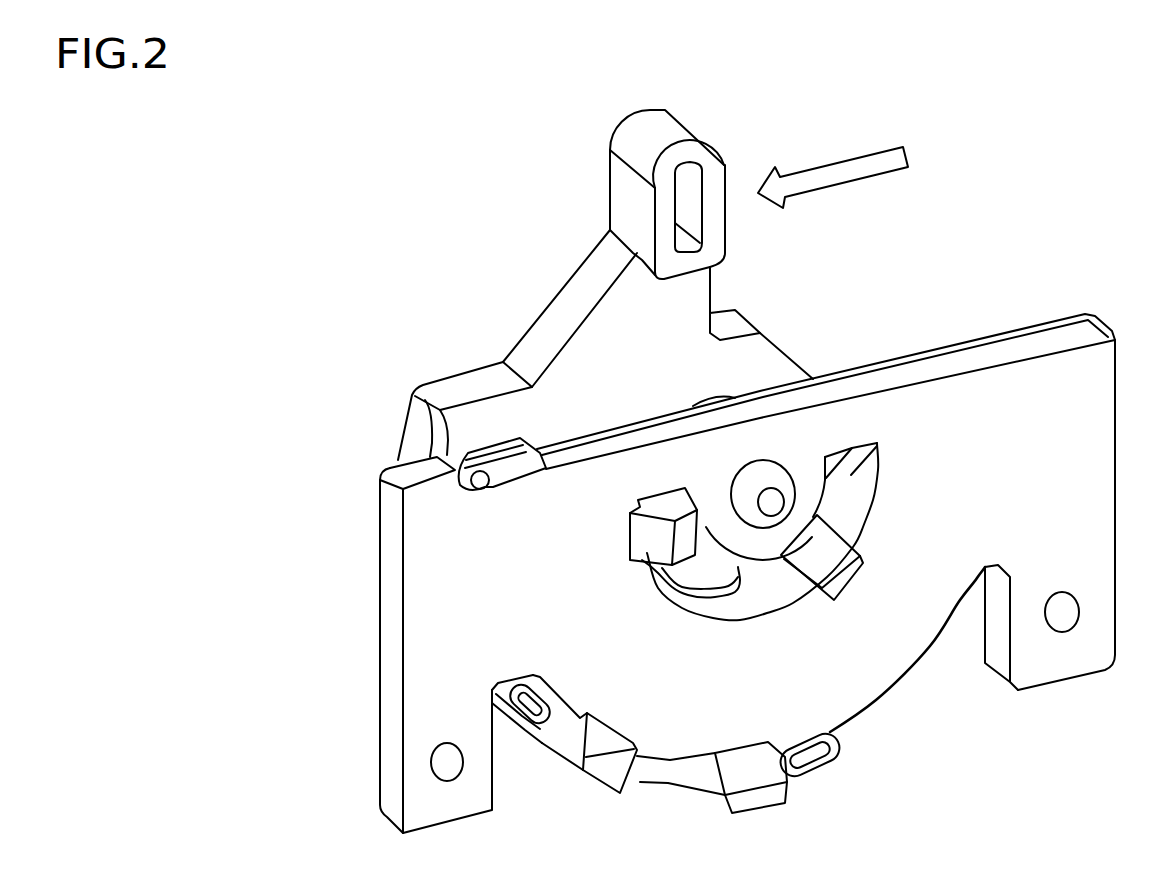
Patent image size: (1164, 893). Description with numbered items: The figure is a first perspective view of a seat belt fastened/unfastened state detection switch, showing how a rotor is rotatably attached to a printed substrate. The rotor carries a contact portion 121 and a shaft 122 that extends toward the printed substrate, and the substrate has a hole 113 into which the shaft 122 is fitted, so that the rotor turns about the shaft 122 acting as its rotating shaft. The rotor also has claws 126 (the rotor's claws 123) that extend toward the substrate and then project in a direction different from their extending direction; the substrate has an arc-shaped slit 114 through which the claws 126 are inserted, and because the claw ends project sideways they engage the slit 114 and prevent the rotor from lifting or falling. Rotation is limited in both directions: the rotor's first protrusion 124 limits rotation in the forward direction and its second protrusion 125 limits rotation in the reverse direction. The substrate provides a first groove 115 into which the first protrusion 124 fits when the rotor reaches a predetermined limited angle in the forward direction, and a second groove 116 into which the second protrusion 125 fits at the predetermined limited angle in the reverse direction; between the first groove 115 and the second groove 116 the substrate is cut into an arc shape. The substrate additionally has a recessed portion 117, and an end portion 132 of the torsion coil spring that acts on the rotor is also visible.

The hole 113 is at (732, 500).
The slit 114 is at (880, 449).
The first groove 115 is at (1003, 564).
The second groove 116 is at (523, 679).
The recessed portion 117 is at (417, 400).
The contact portion 121 is at (610, 157).
The shaft 122 is at (758, 472).
The claws 123 is at (603, 777).
The first protrusion 124 is at (823, 767).
The second protrusion 125 is at (540, 740).
The claws 126 is at (652, 552).
The end portion 132 is at (478, 490).